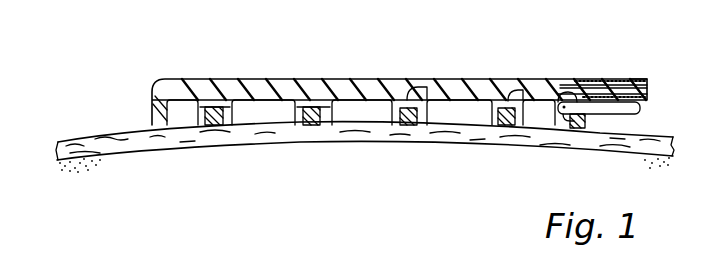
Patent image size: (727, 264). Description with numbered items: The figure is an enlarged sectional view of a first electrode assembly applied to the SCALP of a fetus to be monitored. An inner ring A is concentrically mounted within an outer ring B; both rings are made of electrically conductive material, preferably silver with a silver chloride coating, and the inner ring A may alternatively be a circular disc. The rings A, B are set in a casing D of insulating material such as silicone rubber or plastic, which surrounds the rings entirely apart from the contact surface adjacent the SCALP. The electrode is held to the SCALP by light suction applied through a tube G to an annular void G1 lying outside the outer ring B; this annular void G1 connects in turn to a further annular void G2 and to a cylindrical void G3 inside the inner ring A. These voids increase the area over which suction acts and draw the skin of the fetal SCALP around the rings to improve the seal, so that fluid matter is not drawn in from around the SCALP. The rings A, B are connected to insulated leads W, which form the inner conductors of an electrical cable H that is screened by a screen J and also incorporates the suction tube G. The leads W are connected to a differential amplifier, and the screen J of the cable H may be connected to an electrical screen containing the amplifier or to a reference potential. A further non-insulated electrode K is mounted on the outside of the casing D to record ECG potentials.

The scalp SCALP is at (122, 125).
The casing D is at (153, 97).
The annular void G1 is at (183, 106).
The annular void G2 is at (262, 106).
The cylindrical void G3 is at (365, 105).
The outer ring B is at (221, 128).
The inner ring A is at (312, 124).
The insulated leads W is at (583, 78).
The screen J is at (628, 78).
The electrical cable H is at (640, 78).
The tube G is at (615, 108).
The non-insulated electrode K is at (578, 130).